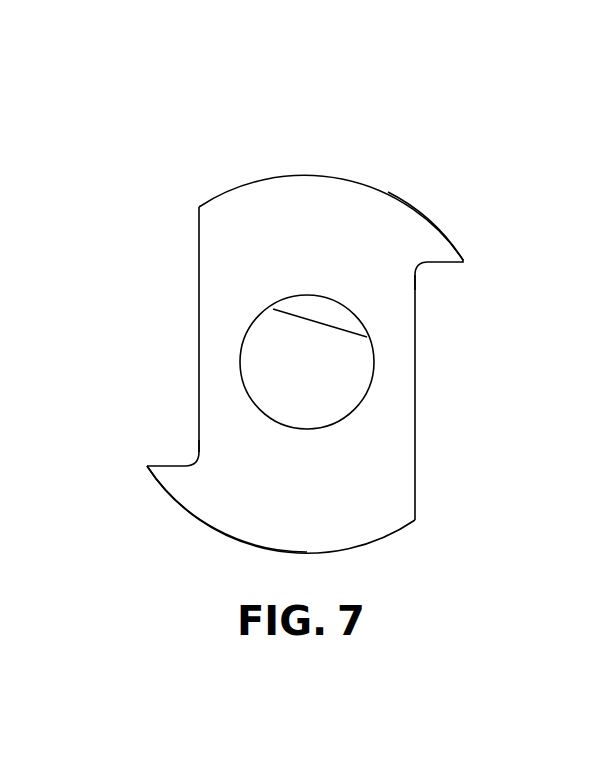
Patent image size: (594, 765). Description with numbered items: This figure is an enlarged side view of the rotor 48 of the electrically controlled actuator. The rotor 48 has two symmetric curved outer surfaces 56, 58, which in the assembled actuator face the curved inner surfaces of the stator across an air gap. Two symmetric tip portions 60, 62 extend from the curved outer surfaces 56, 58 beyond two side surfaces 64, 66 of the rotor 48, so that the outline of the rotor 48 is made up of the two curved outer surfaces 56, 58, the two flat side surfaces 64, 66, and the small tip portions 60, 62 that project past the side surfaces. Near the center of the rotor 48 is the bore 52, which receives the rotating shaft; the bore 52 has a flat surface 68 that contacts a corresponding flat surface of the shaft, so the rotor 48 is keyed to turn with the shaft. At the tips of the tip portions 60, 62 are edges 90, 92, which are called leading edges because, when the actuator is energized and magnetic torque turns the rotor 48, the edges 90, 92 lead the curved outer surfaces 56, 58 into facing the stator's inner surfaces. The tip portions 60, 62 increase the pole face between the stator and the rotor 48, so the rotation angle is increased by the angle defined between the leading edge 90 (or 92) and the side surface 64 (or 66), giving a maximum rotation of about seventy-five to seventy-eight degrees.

The rotor 48 is at (310, 348).
The bore 52 is at (342, 373).
The curved outer surface 56 is at (383, 537).
The curved outer surface 58 is at (388, 192).
The tip portion 60 is at (172, 480).
The tip portion 62 is at (427, 238).
The side surface 64 is at (199, 278).
The side surface 66 is at (415, 356).
The flat surface 68 is at (328, 328).
The leading edge 90 is at (147, 467).
The leading edge 92 is at (463, 260).